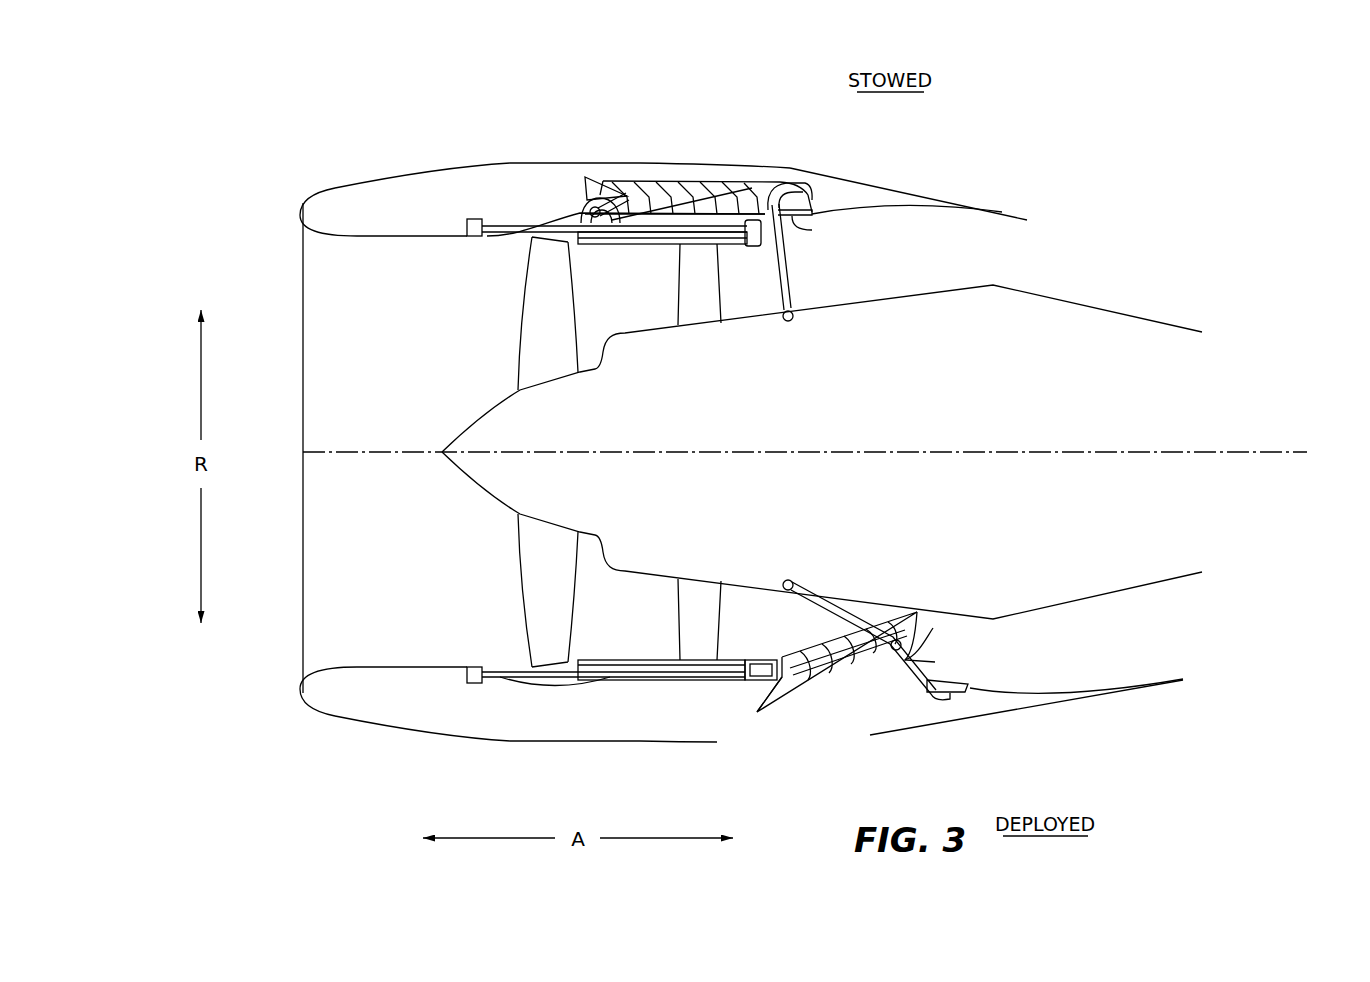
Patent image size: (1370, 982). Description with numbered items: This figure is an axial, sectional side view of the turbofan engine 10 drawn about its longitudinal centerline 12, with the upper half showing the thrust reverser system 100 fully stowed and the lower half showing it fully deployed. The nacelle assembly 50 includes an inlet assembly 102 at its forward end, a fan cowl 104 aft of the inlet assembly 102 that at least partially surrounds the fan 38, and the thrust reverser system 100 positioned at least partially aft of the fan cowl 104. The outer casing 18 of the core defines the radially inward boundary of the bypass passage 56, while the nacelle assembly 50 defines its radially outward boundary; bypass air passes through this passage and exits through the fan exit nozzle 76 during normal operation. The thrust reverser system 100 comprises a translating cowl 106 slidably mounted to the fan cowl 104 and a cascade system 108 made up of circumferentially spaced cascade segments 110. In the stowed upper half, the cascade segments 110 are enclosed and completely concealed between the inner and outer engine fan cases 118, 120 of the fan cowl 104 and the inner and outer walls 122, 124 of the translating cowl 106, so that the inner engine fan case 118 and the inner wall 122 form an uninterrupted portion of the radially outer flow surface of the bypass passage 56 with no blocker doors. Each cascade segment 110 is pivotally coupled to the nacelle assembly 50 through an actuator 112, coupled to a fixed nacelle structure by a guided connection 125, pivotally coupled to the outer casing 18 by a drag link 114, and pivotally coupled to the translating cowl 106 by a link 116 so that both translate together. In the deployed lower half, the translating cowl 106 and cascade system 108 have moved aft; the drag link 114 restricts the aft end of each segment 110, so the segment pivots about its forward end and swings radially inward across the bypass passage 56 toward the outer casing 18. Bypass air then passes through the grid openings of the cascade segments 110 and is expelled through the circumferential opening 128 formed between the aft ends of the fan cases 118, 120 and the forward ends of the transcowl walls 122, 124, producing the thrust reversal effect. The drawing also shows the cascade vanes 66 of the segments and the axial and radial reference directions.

The turbofan engine 10 is at (410, 120).
The longitudinal centerline 12 is at (1158, 452).
The outer casing 18 is at (1068, 297).
The fan 38 is at (470, 370).
The nacelle assembly 50 is at (713, 117).
The bypass passage 56 is at (933, 266).
The cascade vanes 66 is at (835, 683).
The fan exit nozzle 76 is at (1020, 248).
The thrust reverser system 100 is at (670, 170).
The inlet assembly 102 is at (387, 173).
The fan cowl 104 is at (508, 160).
The translating cowl (transcowl) 106 is at (915, 188).
The cascade system 108 is at (618, 177).
The cascade segment 110 is at (690, 213).
The actuator 112 is at (487, 240).
The drag link 114 is at (790, 282).
The link 116 is at (795, 186).
The inner engine fan case 118 is at (718, 680).
The outer engine fan case 120 is at (627, 163).
The inner wall 122 is at (790, 218).
The outer wall 124 is at (745, 180).
The guided connection 125 is at (622, 250).
The circumferential opening 128 is at (753, 755).